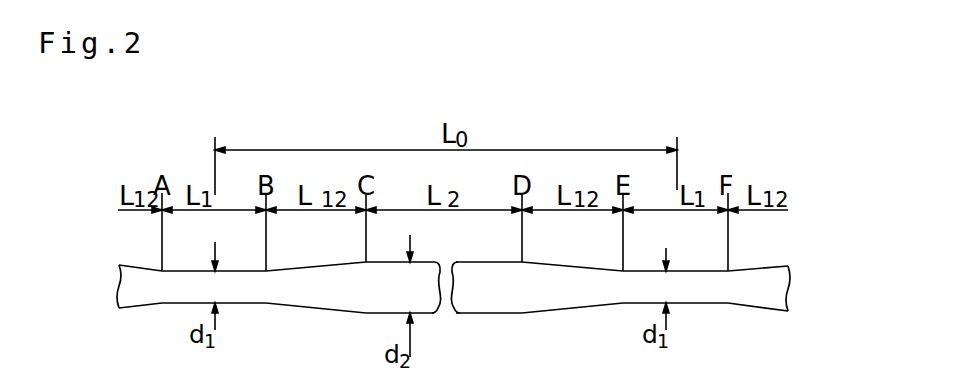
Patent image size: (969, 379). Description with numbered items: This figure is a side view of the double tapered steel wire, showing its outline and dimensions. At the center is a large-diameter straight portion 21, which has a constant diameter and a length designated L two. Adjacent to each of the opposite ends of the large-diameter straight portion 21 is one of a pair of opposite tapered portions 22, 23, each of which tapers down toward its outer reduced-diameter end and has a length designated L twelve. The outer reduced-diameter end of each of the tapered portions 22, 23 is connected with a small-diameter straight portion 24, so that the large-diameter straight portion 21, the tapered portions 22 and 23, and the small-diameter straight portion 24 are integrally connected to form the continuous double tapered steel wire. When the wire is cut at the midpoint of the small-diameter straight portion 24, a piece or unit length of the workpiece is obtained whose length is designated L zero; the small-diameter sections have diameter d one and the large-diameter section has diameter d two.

The large-diameter straight portion 21 is at (486, 311).
The tapered portion 22 is at (328, 308).
The tapered portion 23 is at (141, 304).
The small-diameter straight portion 24 is at (243, 298).